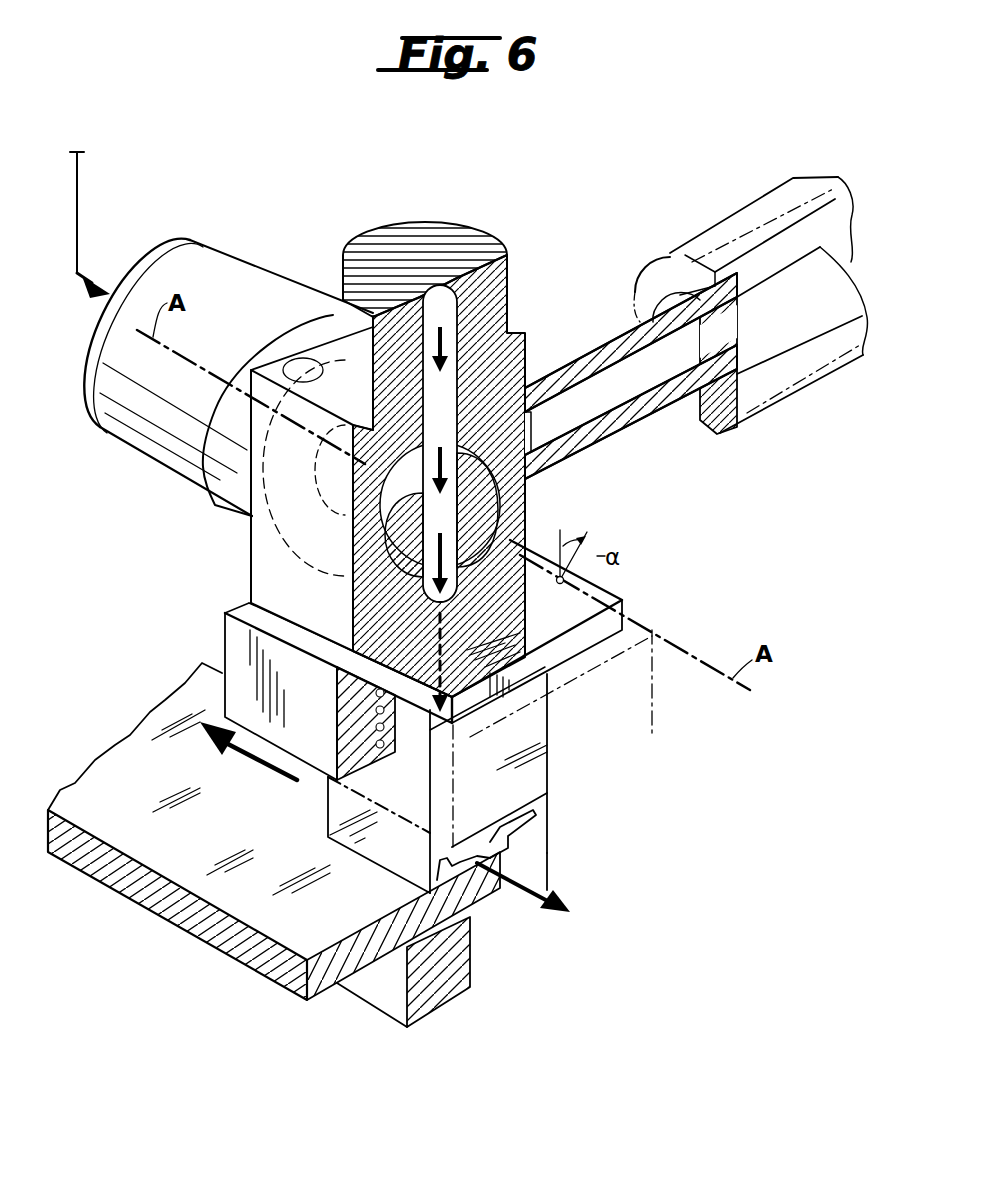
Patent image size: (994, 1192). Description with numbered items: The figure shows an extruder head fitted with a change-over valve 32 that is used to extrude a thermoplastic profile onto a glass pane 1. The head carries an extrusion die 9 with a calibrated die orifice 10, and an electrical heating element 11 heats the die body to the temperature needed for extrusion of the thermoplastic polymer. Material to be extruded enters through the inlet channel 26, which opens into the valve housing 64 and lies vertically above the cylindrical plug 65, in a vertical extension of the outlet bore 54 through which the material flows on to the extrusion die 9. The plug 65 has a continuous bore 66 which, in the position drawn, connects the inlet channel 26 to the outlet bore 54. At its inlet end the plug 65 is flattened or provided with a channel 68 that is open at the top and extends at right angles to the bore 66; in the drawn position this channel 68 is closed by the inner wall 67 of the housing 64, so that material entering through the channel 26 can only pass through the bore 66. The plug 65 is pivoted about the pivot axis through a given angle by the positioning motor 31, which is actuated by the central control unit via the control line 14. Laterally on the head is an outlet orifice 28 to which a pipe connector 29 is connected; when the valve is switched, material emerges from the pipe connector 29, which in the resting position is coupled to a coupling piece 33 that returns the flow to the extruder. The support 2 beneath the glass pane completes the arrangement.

The glass pane 1 is at (240, 960).
The support column 2 is at (470, 987).
The extrusion die 9 is at (533, 828).
The die orifice 10 is at (510, 833).
The electrical heating element 11 is at (337, 745).
The control line 14 is at (80, 182).
The inlet channel 26 is at (527, 367).
The outlet orifice 28 is at (533, 452).
The pipe connector 29 is at (720, 383).
The positioning motor 31 is at (237, 287).
The change-over valve 32 is at (242, 539).
The coupling piece 33 is at (740, 222).
The outlet bore 54 is at (453, 593).
The valve housing 64 is at (380, 606).
The cylindrical plug 65 is at (368, 546).
The continuous bore 66 is at (365, 585).
The inner wall 67 is at (530, 398).
The channel 68 is at (337, 492).